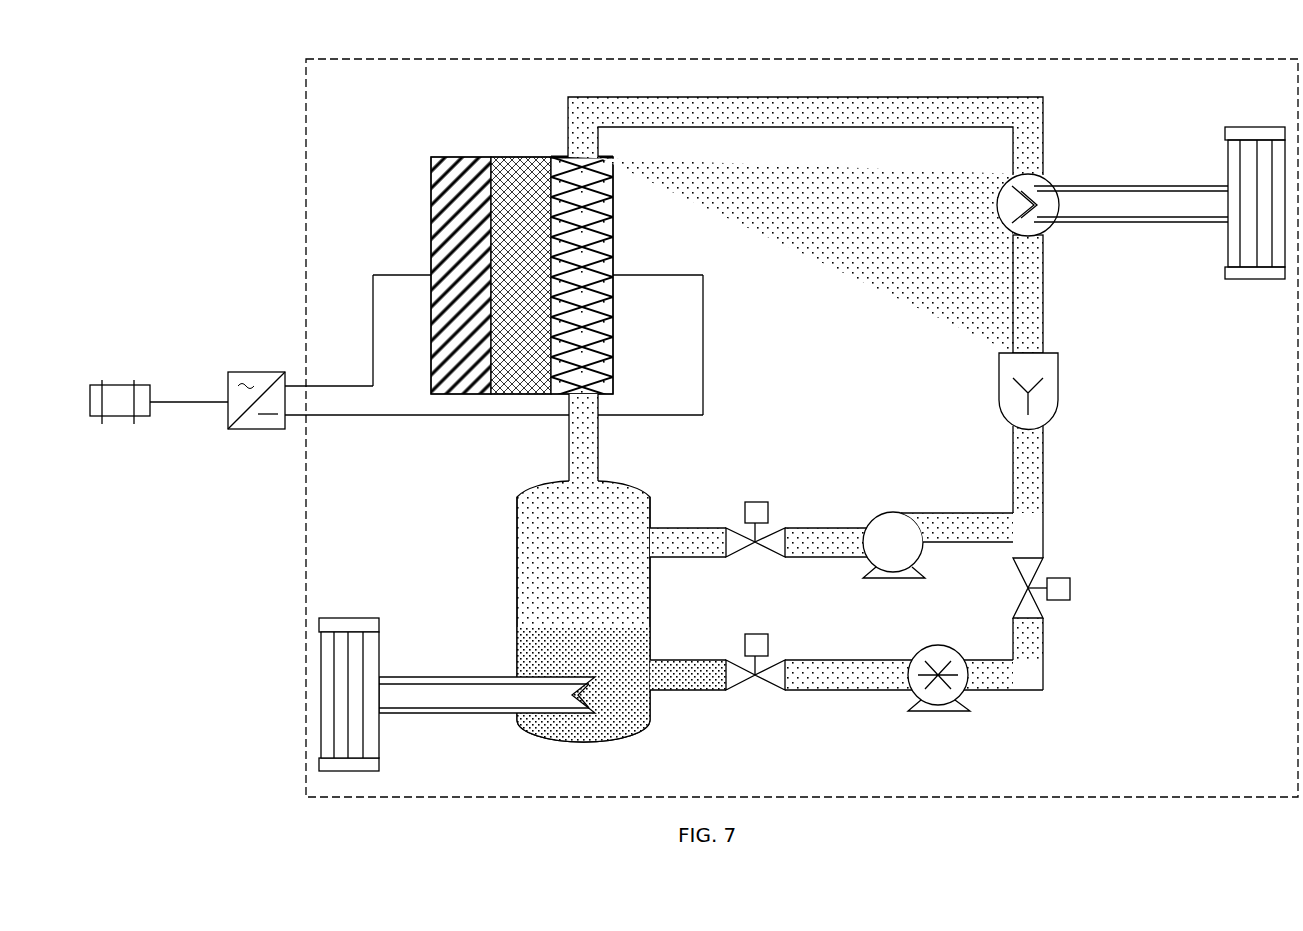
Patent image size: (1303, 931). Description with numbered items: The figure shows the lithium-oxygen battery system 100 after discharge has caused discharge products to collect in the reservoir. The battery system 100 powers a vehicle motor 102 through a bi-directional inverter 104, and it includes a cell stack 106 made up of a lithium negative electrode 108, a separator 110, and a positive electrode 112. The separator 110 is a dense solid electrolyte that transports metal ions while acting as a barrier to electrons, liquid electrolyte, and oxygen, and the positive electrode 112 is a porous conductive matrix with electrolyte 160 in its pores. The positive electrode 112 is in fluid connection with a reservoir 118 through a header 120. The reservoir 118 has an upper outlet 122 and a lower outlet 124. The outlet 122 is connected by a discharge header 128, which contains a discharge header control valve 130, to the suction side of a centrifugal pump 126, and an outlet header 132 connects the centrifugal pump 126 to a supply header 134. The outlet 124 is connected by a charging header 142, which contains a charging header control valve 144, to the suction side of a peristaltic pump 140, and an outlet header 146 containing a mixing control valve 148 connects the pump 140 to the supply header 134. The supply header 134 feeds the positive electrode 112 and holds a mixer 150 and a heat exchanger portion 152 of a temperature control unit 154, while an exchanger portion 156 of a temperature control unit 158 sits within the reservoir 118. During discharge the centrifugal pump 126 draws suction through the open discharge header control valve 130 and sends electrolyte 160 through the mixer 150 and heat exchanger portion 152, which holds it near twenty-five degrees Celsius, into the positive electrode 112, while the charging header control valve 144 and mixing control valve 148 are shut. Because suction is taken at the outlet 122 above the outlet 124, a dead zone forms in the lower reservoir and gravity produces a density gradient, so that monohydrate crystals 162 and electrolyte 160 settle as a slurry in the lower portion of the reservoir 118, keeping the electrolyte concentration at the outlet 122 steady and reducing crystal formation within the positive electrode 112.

The battery system 100 is at (306, 176).
The vehicle motor 102 is at (112, 385).
The bi-directional inverter 104 is at (260, 372).
The cell stack 106 is at (511, 246).
The lithium negative electrode 108 is at (431, 243).
The separator 110 is at (530, 157).
The positive electrode 112 is at (613, 230).
The reservoir 118 is at (530, 568).
The header 120 is at (569, 458).
The outlet 122 is at (664, 517).
The outlet 124 is at (660, 702).
The centrifugal pump 126 is at (882, 513).
The discharge header 128 is at (835, 557).
The discharge header control valve 130 is at (758, 502).
The outlet header 132 is at (990, 512).
The supply header 134 is at (1045, 480).
The peristaltic pump 140 is at (924, 647).
The charging header 142 is at (870, 690).
The charging header control valve 144 is at (745, 636).
The outlet header 146 is at (1010, 690).
The mixing control valve 148 is at (1070, 590).
The mixer 150 is at (1058, 378).
The heat exchanger portion 152 is at (1045, 184).
The temperature control unit 154 is at (1146, 118).
The exchanger portion 156 is at (574, 714).
The temperature control unit 158 is at (322, 598).
The electrolyte 160 is at (648, 112).
The monohydrate crystals 162 is at (530, 636).